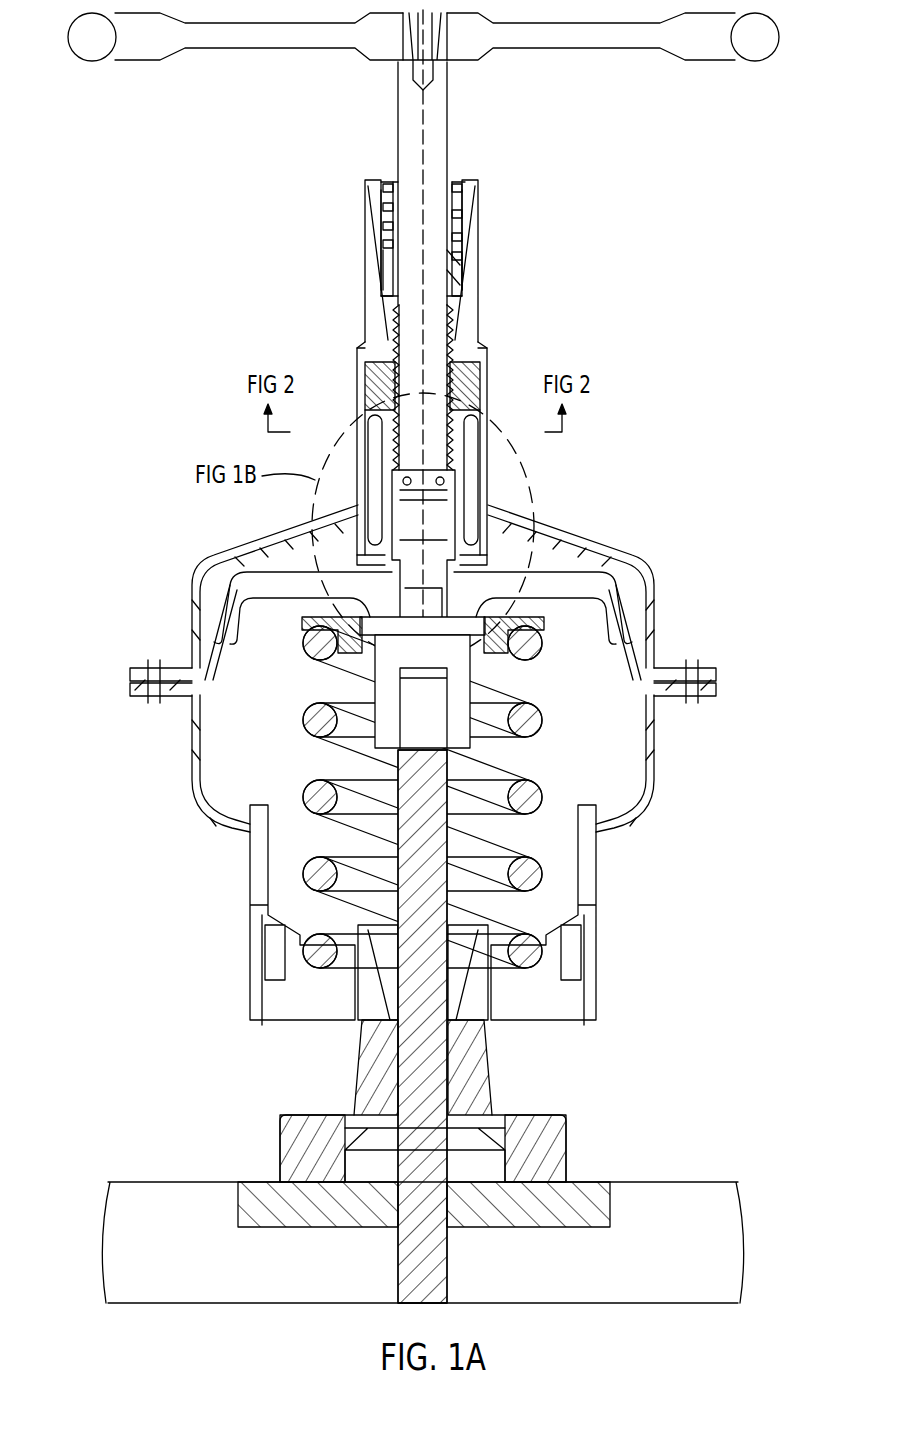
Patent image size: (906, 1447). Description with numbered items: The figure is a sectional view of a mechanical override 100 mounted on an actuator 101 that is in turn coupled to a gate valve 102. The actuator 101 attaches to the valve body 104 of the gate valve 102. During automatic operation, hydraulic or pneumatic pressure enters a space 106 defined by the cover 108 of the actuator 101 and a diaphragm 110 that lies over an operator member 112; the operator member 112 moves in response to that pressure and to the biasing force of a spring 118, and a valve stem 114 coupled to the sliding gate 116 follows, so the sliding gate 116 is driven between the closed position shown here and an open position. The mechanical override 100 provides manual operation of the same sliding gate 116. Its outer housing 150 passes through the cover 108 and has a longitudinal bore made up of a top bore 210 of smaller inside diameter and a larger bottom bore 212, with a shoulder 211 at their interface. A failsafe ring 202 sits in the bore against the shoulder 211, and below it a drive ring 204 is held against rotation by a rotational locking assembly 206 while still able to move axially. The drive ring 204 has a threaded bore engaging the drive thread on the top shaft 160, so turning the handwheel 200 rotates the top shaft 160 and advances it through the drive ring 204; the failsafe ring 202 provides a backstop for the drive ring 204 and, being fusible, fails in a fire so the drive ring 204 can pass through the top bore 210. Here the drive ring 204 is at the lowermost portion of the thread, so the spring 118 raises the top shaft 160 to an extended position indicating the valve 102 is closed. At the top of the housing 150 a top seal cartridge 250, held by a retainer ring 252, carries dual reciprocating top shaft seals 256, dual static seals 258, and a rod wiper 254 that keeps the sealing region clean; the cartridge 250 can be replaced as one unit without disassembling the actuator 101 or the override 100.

The mechanical override 100 is at (583, 352).
The actuator 101 is at (665, 495).
The gate valve 102 is at (593, 1113).
The valve body 104 is at (530, 1115).
The space 106 is at (552, 540).
The cover 108 is at (610, 540).
The diaphragm 110 is at (632, 548).
The operator member 112 is at (617, 612).
The valve stem 114 is at (397, 882).
The sliding gate 116 is at (435, 1155).
The spring 118 is at (482, 886).
The outer housing 150 is at (470, 265).
The top shaft 160 is at (410, 290).
The handwheel 200 is at (706, 48).
The failsafe ring 202 is at (368, 378).
The drive ring 204 is at (470, 425).
The rotational locking assembly 206 is at (372, 470).
The top bore 210 is at (458, 290).
The shoulder 211 is at (470, 385).
The bottom bore 212 is at (470, 470).
The top seal cartridge 250 is at (490, 189).
The retainer ring 252 is at (455, 185).
The rod wiper 254 is at (378, 185).
The reciprocating top shaft seals 256 is at (383, 228).
The static seals 258 is at (462, 236).